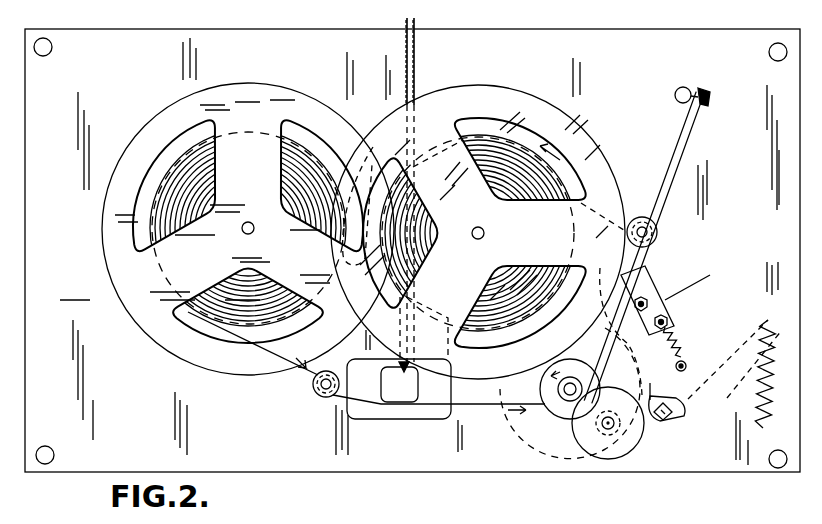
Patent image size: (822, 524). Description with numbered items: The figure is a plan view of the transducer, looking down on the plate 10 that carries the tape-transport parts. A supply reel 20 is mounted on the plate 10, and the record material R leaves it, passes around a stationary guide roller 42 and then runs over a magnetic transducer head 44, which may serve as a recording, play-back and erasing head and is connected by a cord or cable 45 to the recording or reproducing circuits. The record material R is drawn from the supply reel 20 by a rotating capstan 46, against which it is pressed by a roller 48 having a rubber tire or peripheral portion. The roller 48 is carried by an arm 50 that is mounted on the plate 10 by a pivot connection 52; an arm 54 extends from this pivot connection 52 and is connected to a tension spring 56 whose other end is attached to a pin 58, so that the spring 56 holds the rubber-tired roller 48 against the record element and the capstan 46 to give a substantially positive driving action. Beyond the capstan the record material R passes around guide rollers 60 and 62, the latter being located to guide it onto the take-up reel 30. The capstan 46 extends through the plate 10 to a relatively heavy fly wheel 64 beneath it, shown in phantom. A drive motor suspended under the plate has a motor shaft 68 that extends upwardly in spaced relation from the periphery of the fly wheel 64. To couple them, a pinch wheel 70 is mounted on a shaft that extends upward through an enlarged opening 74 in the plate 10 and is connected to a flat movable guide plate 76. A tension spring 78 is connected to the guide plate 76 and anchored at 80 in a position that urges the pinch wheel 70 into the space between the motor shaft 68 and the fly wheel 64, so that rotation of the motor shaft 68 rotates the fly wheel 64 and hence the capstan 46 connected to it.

The plate 10 is at (412, 250).
The supply reel 20 is at (160, 352).
The take-up reel 30 is at (575, 128).
The stationary guide roller 42 is at (318, 398).
The magnetic transducer head 44 is at (398, 392).
The cord or cable 45 is at (414, 76).
The capstan 46 is at (560, 420).
The roller 48 is at (640, 437).
The arm 50 is at (655, 379).
The pivot connection 52 is at (681, 421).
The arm 54 is at (736, 352).
The tension spring 56 is at (751, 373).
The pin 58 is at (763, 428).
The guide roller 60 is at (706, 112).
The guide roller 62 is at (642, 216).
The fly wheel 64 is at (508, 444).
The motor shaft 68 is at (678, 318).
The pinch wheel 70 is at (680, 282).
The enlarged opening 74 is at (688, 296).
The guide plate 76 is at (699, 279).
The tension spring 78 is at (683, 341).
The anchor 80 is at (684, 362).
The record material R is at (478, 405).